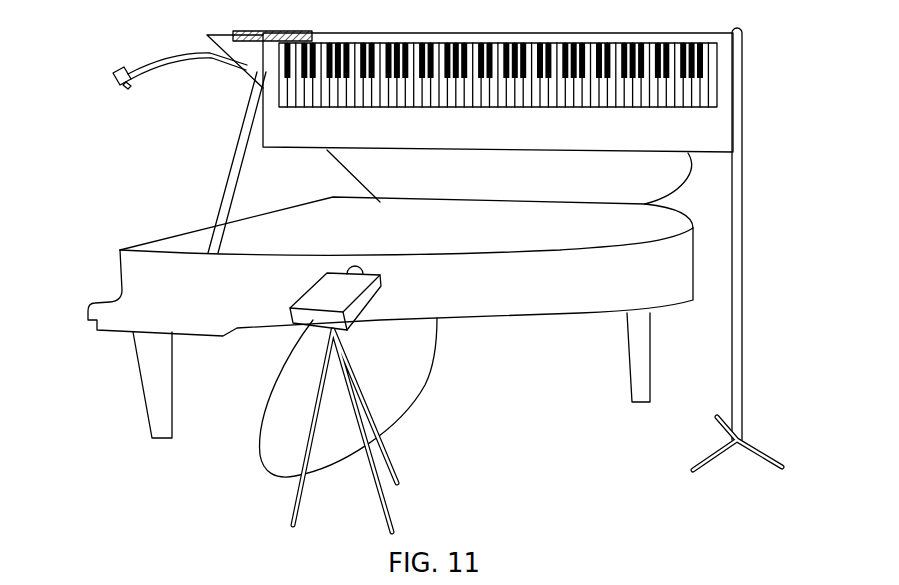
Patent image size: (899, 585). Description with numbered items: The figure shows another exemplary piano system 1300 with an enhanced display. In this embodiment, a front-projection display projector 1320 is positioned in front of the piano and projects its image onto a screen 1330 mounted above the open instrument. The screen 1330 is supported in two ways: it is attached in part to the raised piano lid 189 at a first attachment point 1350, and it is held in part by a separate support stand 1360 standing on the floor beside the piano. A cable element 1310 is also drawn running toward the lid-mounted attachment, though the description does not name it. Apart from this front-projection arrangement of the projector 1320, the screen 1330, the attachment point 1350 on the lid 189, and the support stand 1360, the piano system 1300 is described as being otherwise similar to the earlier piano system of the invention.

The piano system 1300 is at (449, 270).
The piano lid 189 is at (360, 168).
The cable with connector 1310 is at (113, 74).
The front-projection display projector 1320 is at (367, 293).
The screen 1330 is at (545, 33).
The first attachment point 1350 is at (283, 33).
The support stand 1360 is at (735, 218).